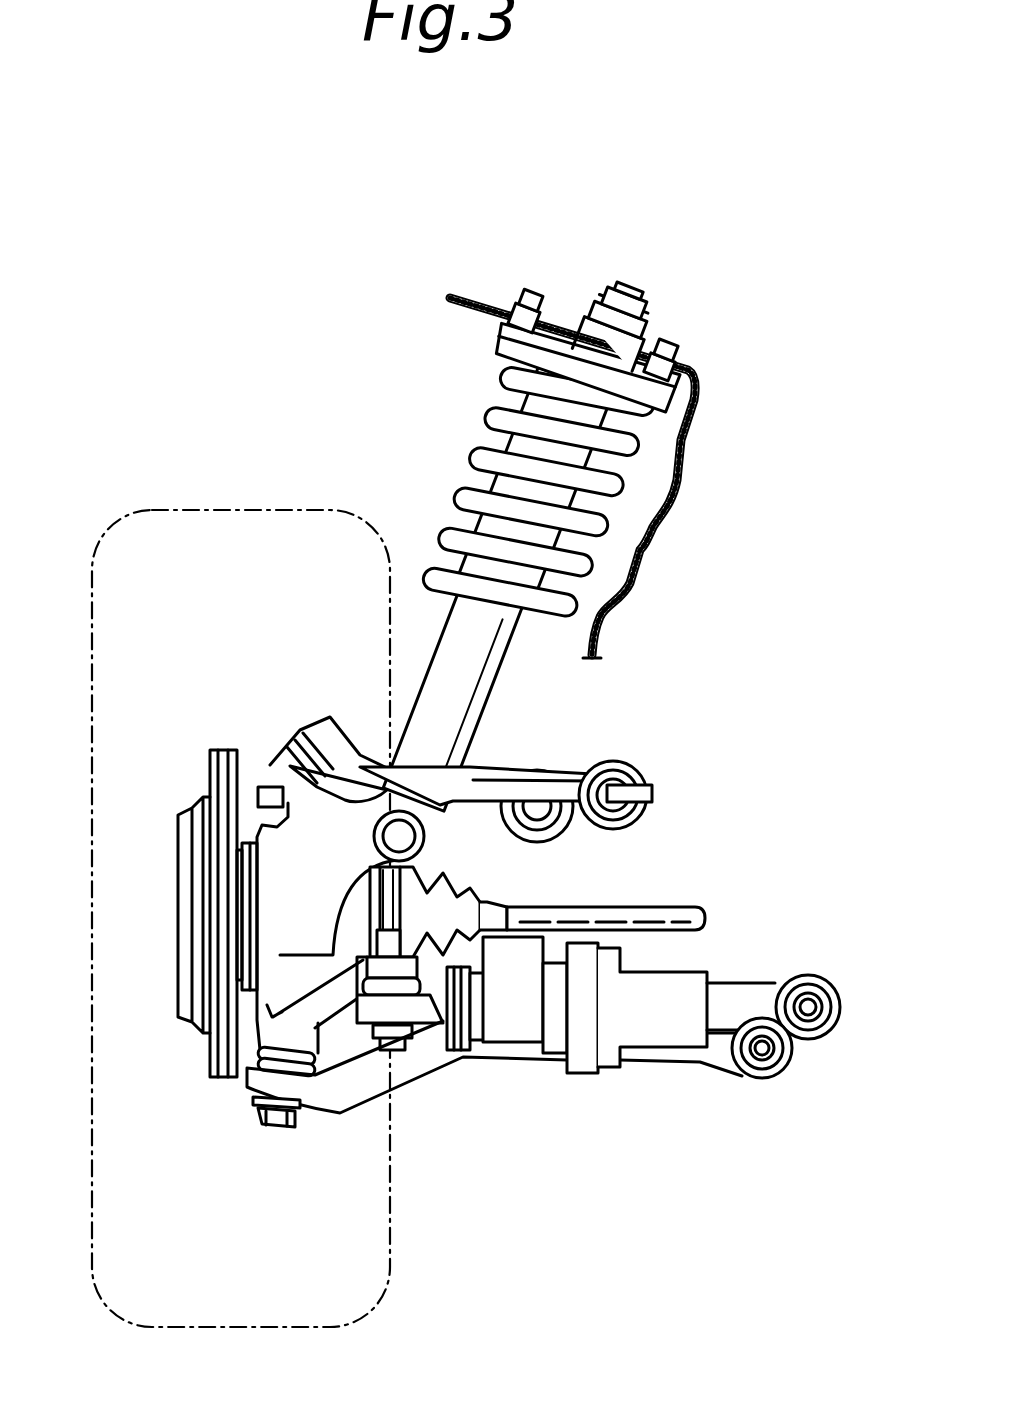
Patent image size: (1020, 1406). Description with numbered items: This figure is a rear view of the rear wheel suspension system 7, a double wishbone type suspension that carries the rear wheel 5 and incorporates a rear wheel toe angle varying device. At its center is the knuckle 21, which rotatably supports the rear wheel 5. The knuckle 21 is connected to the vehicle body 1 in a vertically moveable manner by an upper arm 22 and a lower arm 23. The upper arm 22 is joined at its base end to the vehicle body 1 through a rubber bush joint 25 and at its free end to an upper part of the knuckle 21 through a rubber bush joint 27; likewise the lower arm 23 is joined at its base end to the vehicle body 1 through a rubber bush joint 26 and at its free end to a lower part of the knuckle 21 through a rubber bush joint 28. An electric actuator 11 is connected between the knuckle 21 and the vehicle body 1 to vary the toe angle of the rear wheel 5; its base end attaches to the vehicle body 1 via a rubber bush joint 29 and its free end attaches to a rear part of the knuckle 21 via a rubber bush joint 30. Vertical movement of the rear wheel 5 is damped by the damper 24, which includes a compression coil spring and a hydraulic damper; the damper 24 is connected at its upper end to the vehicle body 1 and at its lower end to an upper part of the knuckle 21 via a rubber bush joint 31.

The vehicle body 1 is at (480, 298).
The rear wheel 5 is at (205, 510).
The rear wheel suspension system 7 is at (758, 446).
The electric actuator 11 is at (622, 1053).
The knuckle 21 is at (272, 928).
The upper arm 22 is at (487, 768).
The lower arm 23 is at (441, 1062).
The damper 24 is at (445, 472).
The rubber bush joint 25 is at (553, 767).
The rubber bush joint 26 is at (778, 1074).
The rubber bush joint 27 is at (310, 730).
The rubber bush joint 28 is at (255, 1087).
The rubber bush joint 29 is at (815, 976).
The rubber bush joint 30 is at (367, 1022).
The rubber bush joint 31 is at (426, 849).